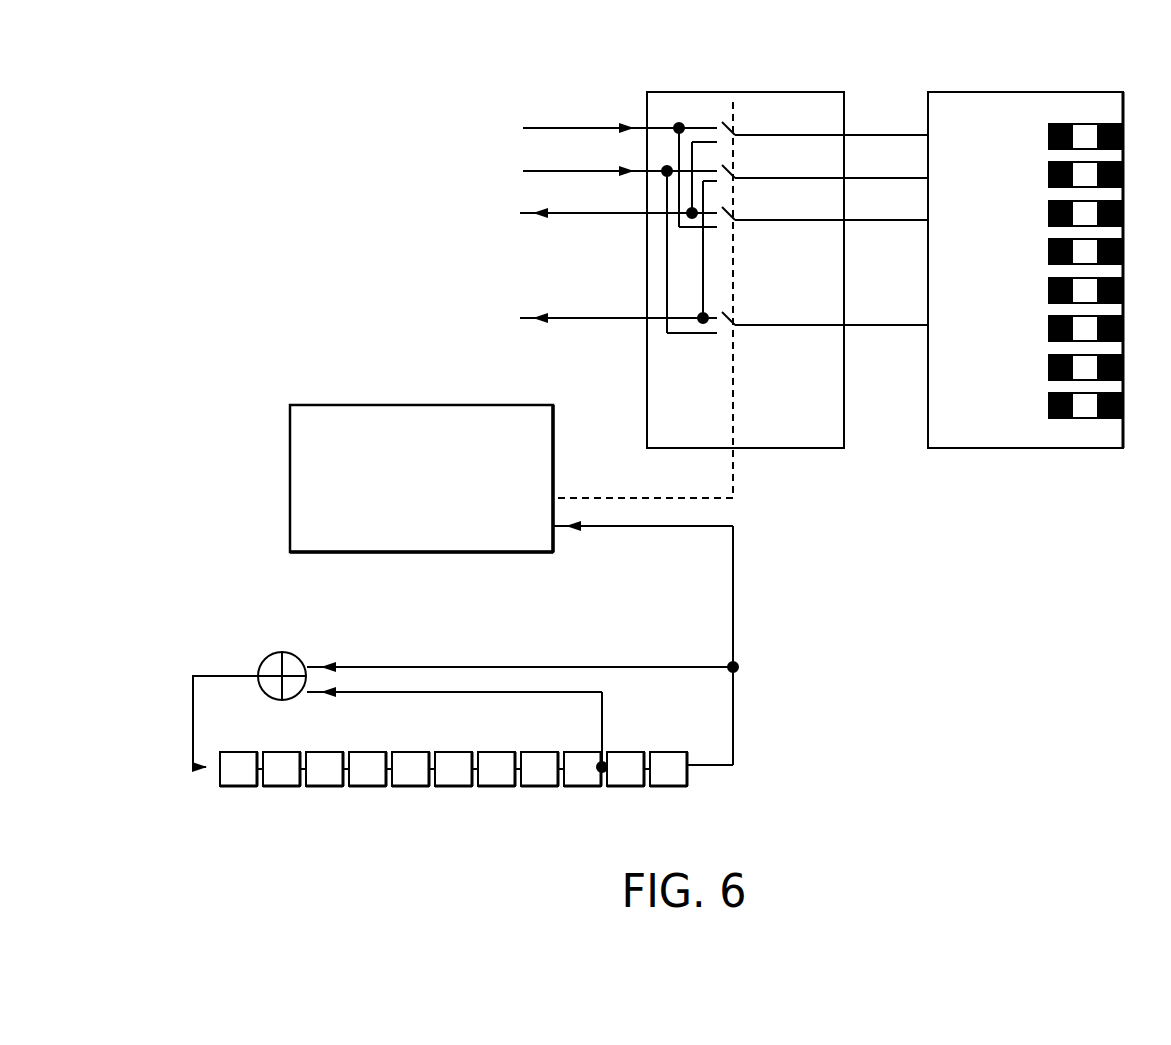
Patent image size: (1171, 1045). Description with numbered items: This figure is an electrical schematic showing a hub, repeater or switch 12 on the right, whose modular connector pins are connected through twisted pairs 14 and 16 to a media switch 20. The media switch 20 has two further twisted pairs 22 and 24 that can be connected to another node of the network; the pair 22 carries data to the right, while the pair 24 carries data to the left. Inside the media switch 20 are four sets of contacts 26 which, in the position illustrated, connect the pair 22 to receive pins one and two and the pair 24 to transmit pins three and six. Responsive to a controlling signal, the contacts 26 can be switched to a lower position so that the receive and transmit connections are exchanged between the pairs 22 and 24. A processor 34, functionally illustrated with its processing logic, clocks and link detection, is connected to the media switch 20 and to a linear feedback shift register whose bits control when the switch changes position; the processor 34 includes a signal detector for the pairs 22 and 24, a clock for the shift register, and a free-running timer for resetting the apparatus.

The hub, repeater or switch 12 is at (902, 456).
The twisted pair 14 is at (898, 174).
The twisted pair 16 is at (896, 231).
The media switch 20 is at (766, 456).
The twisted pair 22 is at (510, 118).
The twisted pair 24 is at (510, 310).
The contacts 26 is at (742, 320).
The processor 34 is at (498, 560).